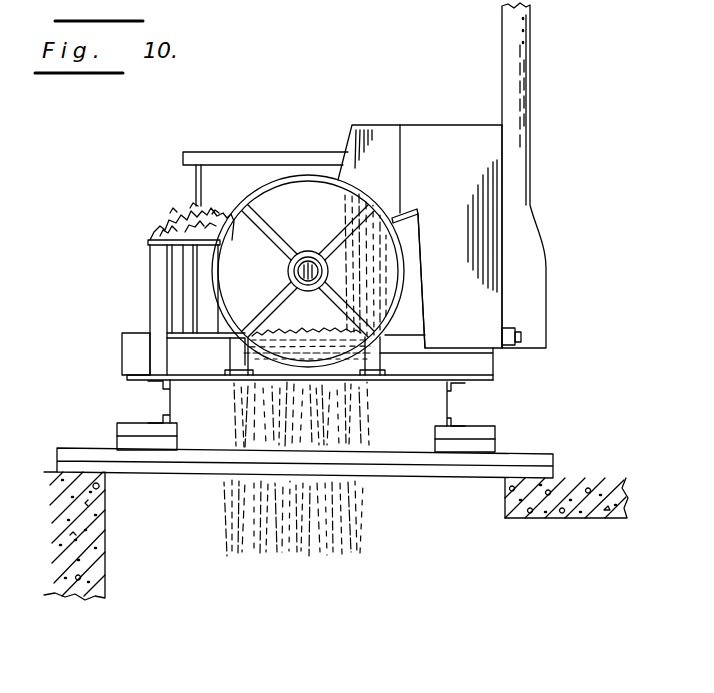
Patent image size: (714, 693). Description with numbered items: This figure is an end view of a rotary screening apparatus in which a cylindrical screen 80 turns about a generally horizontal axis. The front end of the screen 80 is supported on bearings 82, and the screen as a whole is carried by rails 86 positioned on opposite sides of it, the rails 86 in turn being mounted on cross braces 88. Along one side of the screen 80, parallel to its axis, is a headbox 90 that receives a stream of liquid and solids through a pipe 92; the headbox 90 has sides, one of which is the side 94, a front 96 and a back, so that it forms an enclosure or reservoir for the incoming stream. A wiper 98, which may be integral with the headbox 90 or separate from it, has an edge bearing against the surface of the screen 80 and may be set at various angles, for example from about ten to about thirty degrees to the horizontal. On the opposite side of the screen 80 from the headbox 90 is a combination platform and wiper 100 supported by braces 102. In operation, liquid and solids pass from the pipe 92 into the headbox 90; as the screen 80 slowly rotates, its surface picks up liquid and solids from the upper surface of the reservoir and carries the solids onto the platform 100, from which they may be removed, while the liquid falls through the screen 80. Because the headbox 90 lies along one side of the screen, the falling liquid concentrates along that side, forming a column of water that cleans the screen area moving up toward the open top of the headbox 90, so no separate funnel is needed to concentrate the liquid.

The cylindrical screen 80 is at (303, 177).
The bearings 82 is at (235, 350).
The rails 86 is at (163, 397).
The cross braces 88 is at (418, 482).
The headbox 90 is at (412, 125).
The pipe 92 is at (530, 36).
The side of headbox 94 is at (447, 135).
The front of headbox 96 is at (425, 308).
The wiper 98 is at (408, 219).
The combination platform and wiper 100 is at (150, 247).
The braces 102 is at (152, 304).